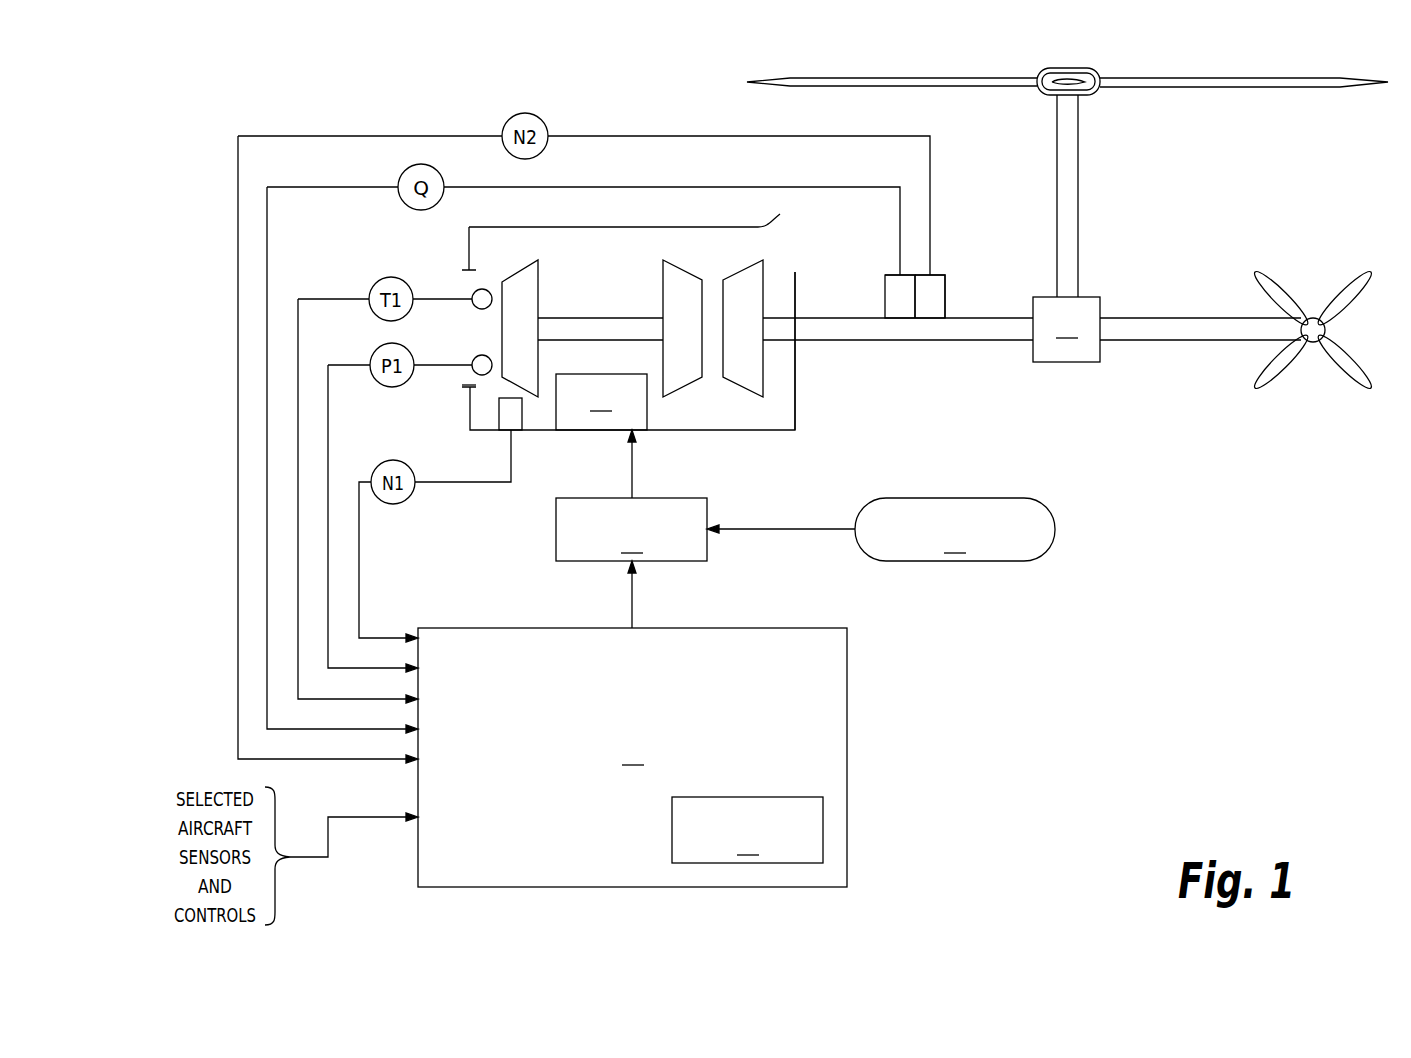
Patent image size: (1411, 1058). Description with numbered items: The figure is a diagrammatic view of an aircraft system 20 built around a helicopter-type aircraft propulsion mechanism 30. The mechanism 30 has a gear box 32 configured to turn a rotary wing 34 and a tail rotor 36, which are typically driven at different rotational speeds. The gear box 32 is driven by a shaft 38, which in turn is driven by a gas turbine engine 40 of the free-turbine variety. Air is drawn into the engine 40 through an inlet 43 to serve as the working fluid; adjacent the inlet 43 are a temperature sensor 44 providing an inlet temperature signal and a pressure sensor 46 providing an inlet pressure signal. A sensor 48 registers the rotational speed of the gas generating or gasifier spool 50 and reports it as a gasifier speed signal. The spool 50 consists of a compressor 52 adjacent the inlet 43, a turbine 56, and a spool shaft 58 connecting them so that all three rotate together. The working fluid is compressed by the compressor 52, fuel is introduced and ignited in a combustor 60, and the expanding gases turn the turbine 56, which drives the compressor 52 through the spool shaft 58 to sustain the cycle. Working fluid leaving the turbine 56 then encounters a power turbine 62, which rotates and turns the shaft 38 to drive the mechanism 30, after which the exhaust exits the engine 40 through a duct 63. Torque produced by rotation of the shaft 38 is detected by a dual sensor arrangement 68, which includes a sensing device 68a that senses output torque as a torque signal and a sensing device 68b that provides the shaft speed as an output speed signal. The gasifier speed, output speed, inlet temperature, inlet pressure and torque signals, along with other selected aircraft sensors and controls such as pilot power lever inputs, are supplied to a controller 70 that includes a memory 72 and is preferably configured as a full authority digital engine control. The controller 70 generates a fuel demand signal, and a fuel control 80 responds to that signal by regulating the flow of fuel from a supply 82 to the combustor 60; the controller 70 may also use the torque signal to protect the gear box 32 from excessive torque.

The aircraft system 20 is at (1184, 513).
The aircraft propulsion mechanism 30 is at (1104, 292).
The gear box 32 is at (1066, 329).
The rotary wing 34 is at (1256, 88).
The tail rotor 36 is at (1352, 275).
The shaft 38 is at (1010, 340).
The gas turbine engine 40 is at (718, 440).
The inlet 43 is at (462, 386).
The temperature sensor 44 is at (497, 290).
The pressure sensor 46 is at (472, 357).
The sensor 48 is at (522, 415).
The gas generating spool 50 is at (548, 264).
The compressor 52 is at (542, 318).
The turbine 56 is at (668, 261).
The spool shaft 58 is at (605, 318).
The combustor 60 is at (601, 402).
The power turbine 62 is at (732, 383).
The duct 63 is at (800, 258).
The dual sensor arrangement 68 is at (926, 278).
The sensing device 68a is at (885, 277).
The sensing device 68b is at (935, 340).
The controller 70 is at (632, 757).
The memory 72 is at (747, 830).
The fuel control 80 is at (631, 529).
The supply 82 is at (955, 529).